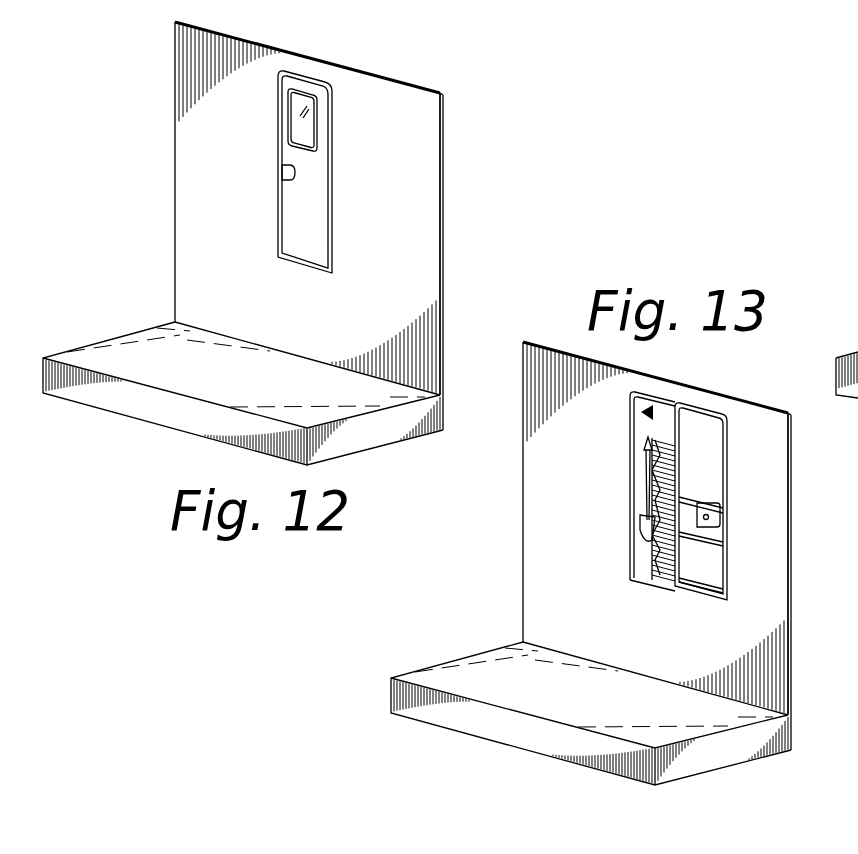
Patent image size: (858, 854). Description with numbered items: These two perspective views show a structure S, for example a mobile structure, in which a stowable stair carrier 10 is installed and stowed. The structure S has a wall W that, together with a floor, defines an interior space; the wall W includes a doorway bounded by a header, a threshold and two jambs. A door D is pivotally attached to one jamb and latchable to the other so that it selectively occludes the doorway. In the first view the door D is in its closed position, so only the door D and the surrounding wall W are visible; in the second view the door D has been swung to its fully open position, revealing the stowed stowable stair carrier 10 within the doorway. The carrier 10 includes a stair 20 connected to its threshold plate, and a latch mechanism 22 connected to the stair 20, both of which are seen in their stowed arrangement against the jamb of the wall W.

In FIG. 13, the stowable stair carrier 10 is at (640, 407).
In FIG. 13, the stair 20 is at (648, 456).
In FIG. 13, the latch mechanism 22 is at (640, 530).
In FIG. 12, the door D is at (308, 221).
In FIG. 13, the door D is at (706, 476).
In FIG. 12, the wall W is at (409, 232).
In FIG. 13, the wall W is at (768, 586).
In FIG. 12, the structure S is at (465, 214).
In FIG. 13, the structure S is at (812, 535).